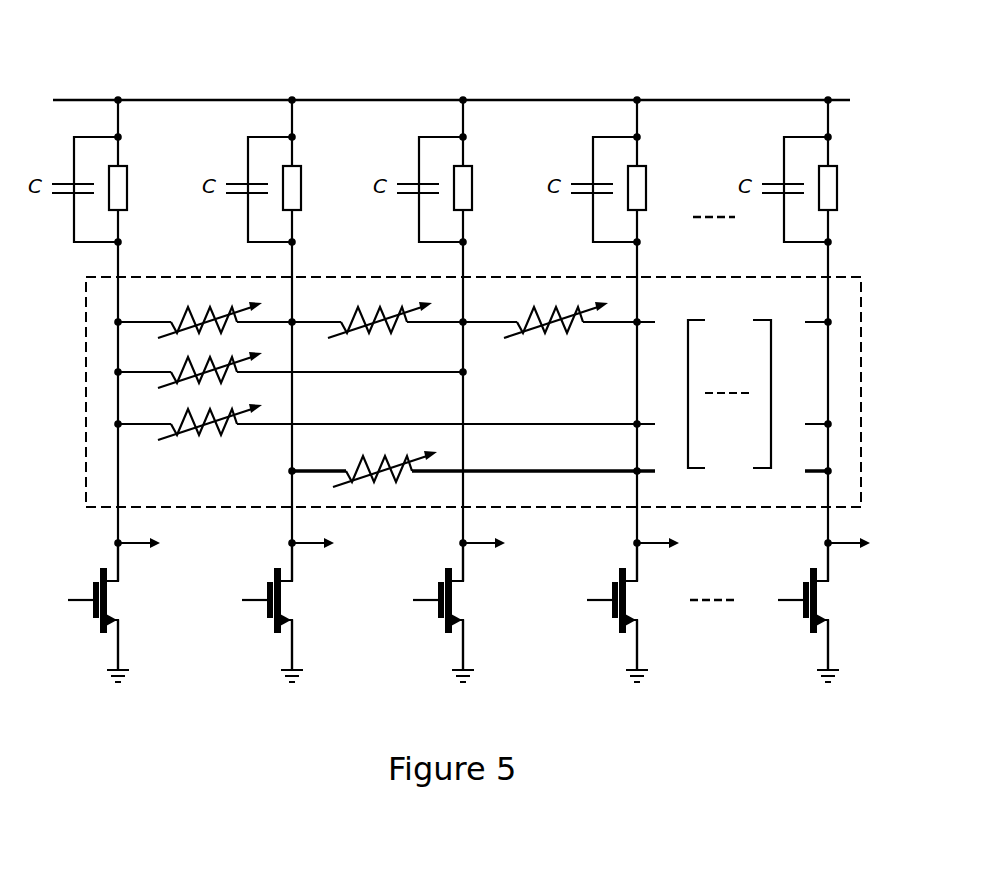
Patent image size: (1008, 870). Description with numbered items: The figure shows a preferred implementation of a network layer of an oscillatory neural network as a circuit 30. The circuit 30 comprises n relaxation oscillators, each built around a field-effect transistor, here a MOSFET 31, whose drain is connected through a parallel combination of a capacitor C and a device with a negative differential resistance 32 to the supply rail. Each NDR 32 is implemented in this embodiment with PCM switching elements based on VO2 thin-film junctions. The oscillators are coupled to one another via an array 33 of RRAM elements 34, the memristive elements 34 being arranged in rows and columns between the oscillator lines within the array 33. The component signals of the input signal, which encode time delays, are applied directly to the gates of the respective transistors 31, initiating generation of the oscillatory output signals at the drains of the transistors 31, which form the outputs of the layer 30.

The circuit 30 is at (864, 54).
The MOSFET 31 is at (885, 563).
The device with a negative differential resistance 32 is at (460, 171).
The array of RRAM elements 33 is at (862, 294).
The RRAM element 34 is at (219, 432).